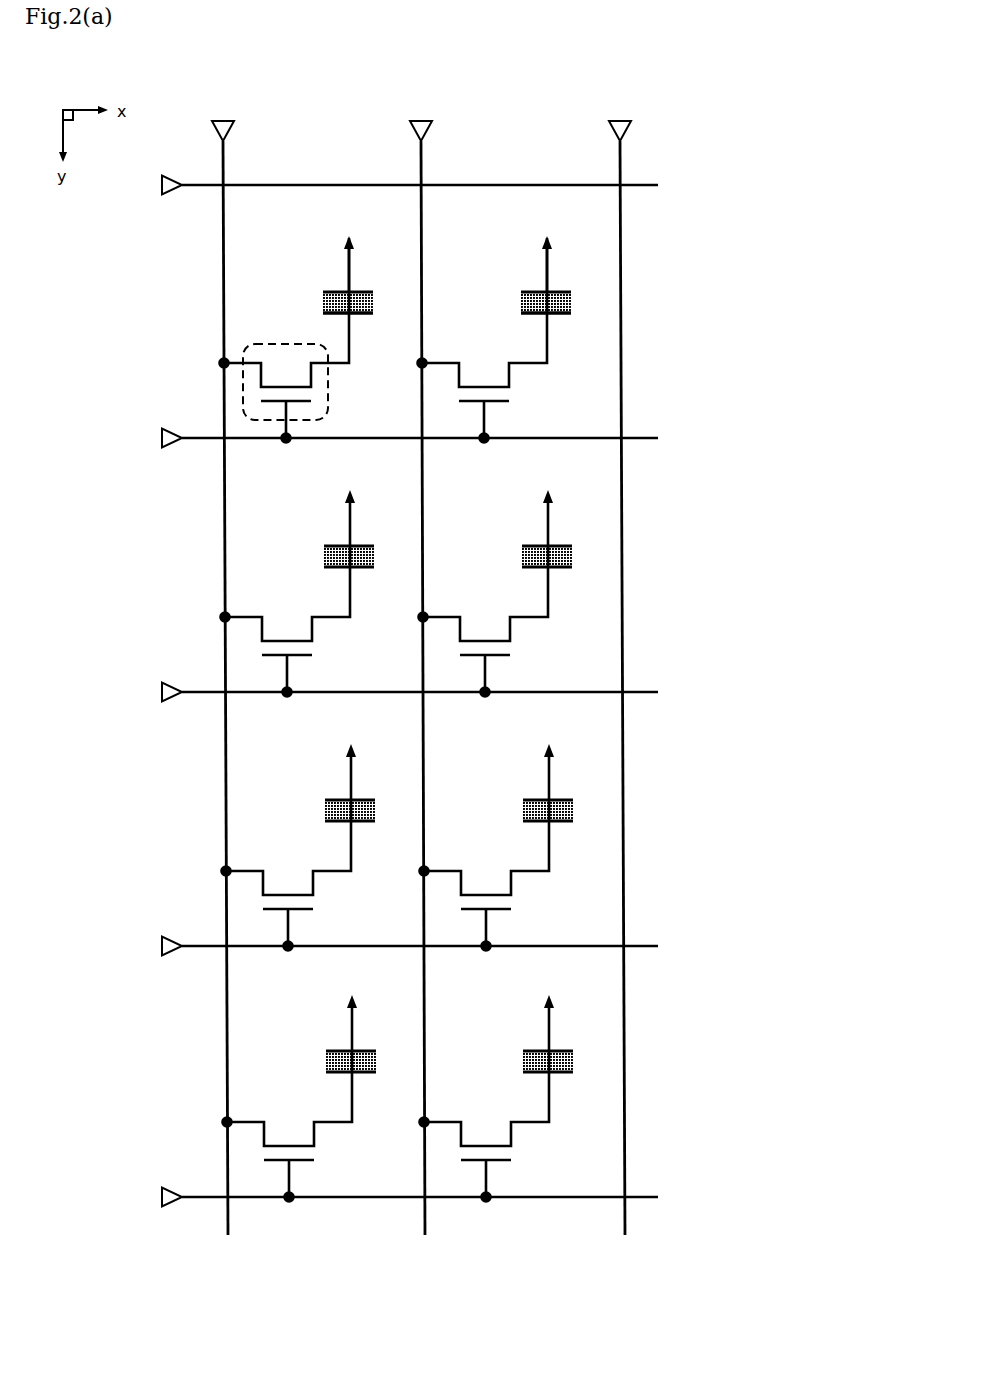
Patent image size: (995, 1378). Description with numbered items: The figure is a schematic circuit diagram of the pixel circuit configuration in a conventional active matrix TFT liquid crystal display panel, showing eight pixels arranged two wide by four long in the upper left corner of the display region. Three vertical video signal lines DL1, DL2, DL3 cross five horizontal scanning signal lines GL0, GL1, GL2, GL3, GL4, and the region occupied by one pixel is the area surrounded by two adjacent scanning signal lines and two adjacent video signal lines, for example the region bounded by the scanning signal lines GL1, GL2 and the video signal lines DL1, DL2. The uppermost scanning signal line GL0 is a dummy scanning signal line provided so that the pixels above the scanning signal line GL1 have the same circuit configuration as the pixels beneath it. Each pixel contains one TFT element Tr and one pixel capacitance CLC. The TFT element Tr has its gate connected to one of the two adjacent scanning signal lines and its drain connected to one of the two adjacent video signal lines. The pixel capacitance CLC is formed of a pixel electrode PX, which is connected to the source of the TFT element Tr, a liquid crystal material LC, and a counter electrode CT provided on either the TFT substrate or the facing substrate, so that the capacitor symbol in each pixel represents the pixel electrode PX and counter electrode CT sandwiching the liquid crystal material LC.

The TFT element Tr is at (273, 329).
The liquid crystal material LC is at (477, 276).
The pixel capacitance CLC is at (517, 276).
The counter electrode CT is at (357, 288).
The pixel electrode PX is at (360, 318).
The video signal line DL1 is at (228, 661).
The video signal line DL2 is at (424, 661).
The video signal line DL3 is at (623, 661).
The dummy scanning signal line GL0 is at (385, 188).
The scanning signal line GL1 is at (385, 441).
The scanning signal line GL2 is at (385, 695).
The scanning signal line GL3 is at (385, 949).
The scanning signal line GL4 is at (385, 1200).